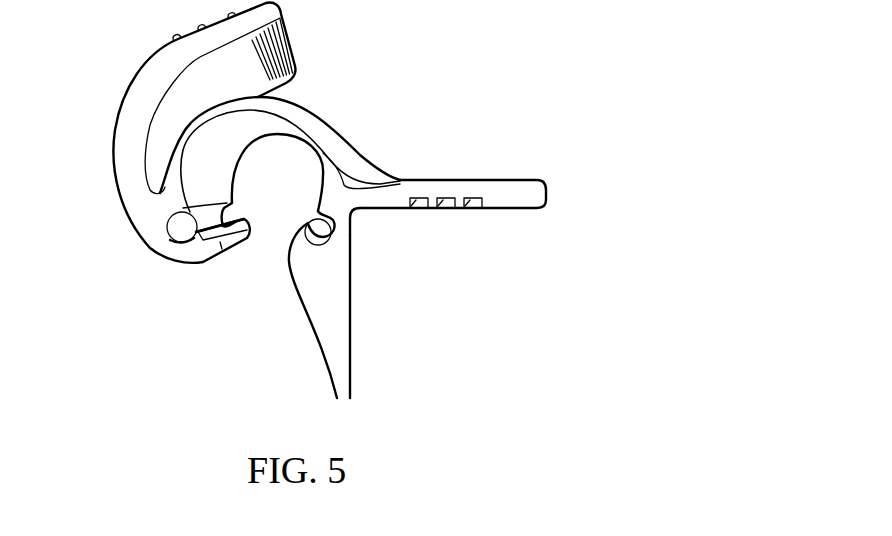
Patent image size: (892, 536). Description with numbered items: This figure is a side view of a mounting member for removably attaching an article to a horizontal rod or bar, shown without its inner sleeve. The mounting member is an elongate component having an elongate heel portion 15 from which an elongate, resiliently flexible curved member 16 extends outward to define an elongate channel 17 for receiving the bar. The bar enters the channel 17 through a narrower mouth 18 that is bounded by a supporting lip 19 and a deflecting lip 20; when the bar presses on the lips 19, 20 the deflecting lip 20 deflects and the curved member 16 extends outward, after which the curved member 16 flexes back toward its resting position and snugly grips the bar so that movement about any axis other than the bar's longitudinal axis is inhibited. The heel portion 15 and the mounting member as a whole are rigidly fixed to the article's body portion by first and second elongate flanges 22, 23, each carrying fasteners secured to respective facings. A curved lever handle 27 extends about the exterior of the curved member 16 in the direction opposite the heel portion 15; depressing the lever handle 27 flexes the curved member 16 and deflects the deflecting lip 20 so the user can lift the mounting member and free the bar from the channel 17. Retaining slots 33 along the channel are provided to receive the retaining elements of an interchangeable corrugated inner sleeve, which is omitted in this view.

The heel portion 15 is at (345, 206).
The curved member 16 is at (311, 115).
The channel 17 is at (290, 174).
The mouth 18 is at (263, 247).
The supporting lip 19 is at (283, 243).
The deflecting lip 20 is at (222, 252).
The first elongate flange 22 is at (513, 188).
The second elongate flange 23 is at (345, 355).
The lever handle 27 is at (154, 72).
The retaining slots 33 is at (185, 231).